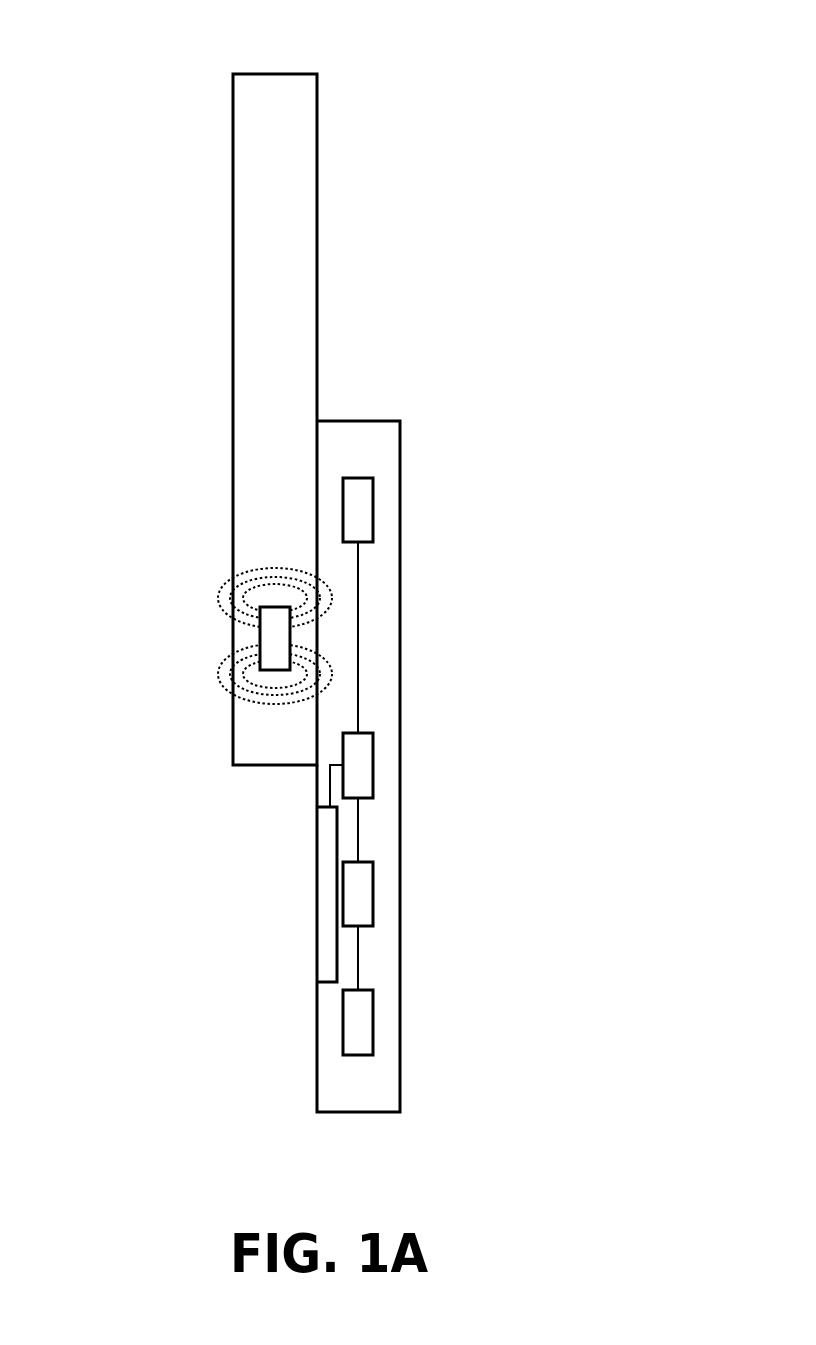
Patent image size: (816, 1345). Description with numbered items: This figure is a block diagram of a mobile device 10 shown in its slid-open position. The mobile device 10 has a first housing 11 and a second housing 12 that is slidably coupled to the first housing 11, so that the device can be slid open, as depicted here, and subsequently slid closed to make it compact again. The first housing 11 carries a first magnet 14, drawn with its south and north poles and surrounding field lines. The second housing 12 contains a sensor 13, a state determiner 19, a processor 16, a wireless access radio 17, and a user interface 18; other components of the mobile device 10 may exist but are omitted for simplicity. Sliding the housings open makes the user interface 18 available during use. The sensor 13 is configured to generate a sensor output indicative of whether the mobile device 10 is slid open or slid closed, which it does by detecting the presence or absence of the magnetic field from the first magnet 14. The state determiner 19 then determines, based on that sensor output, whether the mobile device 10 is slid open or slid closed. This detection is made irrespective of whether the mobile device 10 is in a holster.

The mobile device 10 is at (545, 62).
The first housing 11 is at (233, 170).
The second housing 12 is at (400, 637).
The sensor 13 is at (373, 1023).
The first magnet 14 is at (270, 620).
The processor 16 is at (373, 773).
The wireless access radio 17 is at (373, 510).
The user interface 18 is at (317, 892).
The state determiner 19 is at (373, 897).